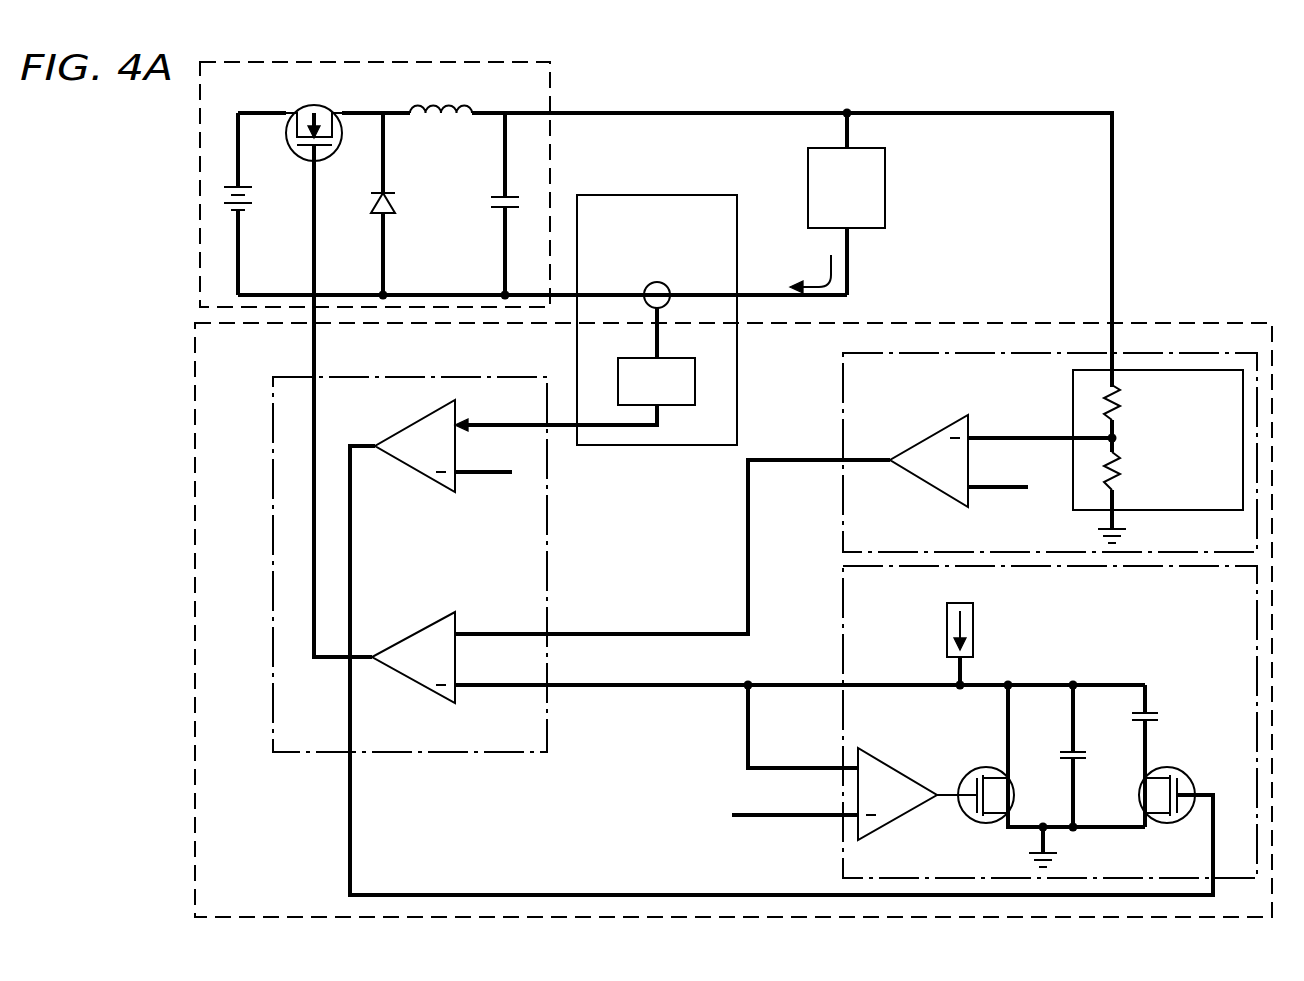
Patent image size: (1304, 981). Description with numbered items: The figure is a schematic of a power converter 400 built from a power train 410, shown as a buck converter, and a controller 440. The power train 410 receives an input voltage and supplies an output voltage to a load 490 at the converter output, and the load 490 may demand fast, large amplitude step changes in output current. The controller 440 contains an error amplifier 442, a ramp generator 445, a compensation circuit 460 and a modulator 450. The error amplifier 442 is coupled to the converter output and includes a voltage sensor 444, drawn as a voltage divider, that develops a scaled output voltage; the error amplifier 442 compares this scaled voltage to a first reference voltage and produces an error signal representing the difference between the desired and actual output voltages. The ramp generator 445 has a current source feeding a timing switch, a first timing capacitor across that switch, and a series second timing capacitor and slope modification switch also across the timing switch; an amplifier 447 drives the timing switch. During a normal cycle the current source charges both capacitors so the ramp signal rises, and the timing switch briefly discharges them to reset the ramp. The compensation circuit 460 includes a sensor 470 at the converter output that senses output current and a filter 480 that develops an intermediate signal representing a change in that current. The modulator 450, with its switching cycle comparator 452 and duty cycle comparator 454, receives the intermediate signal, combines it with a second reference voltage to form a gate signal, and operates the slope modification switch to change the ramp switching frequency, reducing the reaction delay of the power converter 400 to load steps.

The power converter 400 is at (140, 148).
The power train 410 is at (550, 85).
The controller 440 is at (193, 890).
The error amplifier 442 is at (843, 378).
The voltage sensor 444 is at (1215, 510).
The ramp generator 445 is at (843, 585).
The amplifier 447 is at (881, 763).
The modulator 450 is at (547, 738).
The switching cycle comparator 452 is at (410, 424).
The duty cycle comparator 454 is at (419, 631).
The compensation circuit 460 is at (707, 195).
The sensor 470 is at (667, 289).
The filter 480 is at (680, 358).
The load 490 is at (885, 190).